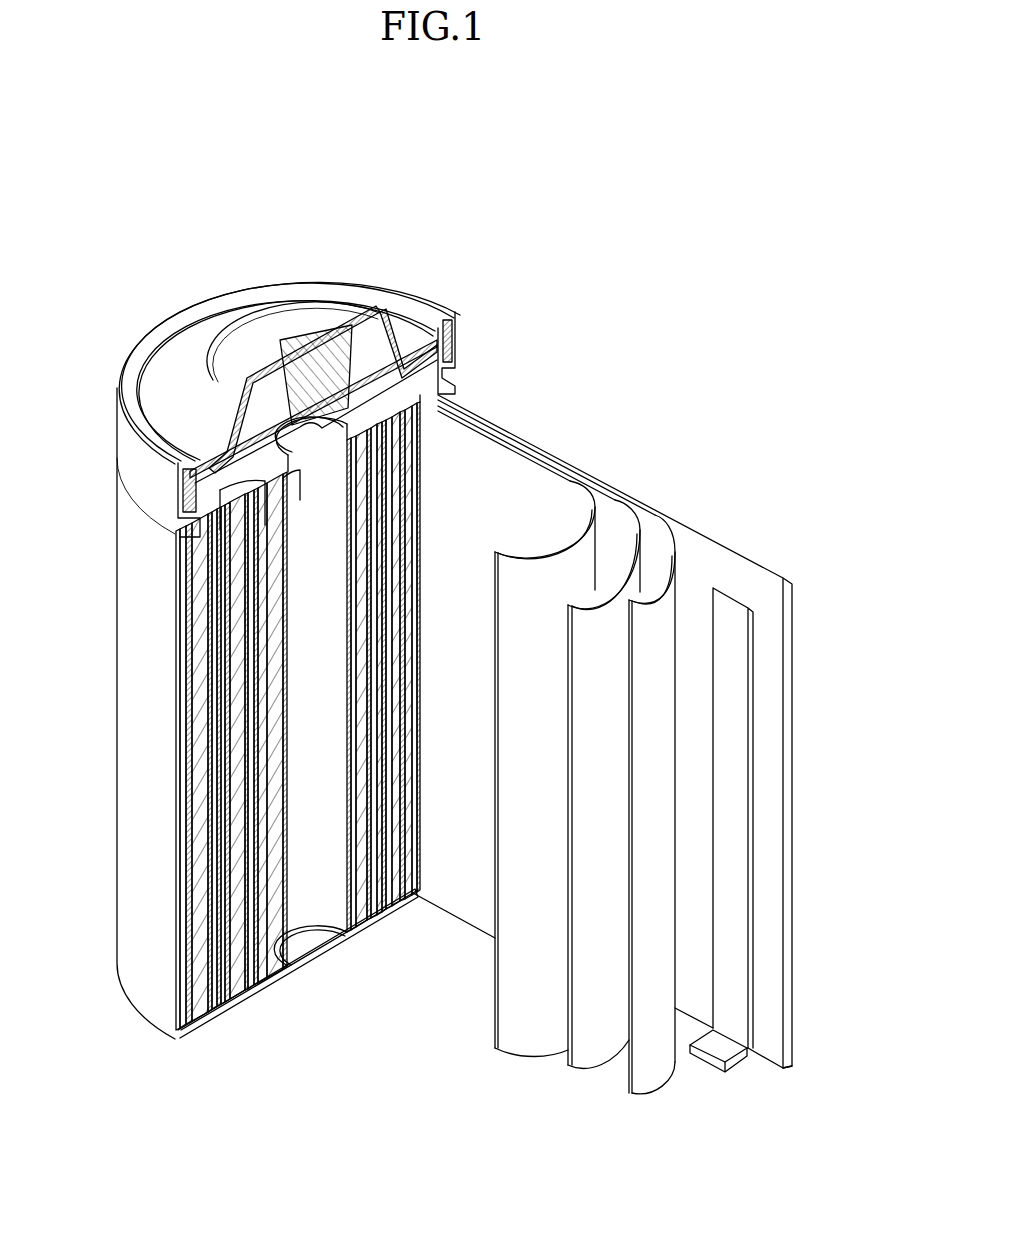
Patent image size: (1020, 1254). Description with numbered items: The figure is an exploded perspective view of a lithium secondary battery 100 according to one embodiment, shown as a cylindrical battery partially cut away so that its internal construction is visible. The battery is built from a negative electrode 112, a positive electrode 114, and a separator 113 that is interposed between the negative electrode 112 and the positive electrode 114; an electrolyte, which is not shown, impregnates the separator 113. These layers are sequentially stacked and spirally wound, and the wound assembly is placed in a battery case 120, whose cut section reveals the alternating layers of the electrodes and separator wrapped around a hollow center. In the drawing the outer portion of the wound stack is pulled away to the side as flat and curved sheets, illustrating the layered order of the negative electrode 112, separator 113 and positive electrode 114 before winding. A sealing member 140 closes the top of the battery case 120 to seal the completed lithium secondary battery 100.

The lithium secondary battery 100 is at (578, 317).
The negative electrode 112 is at (722, 546).
The separator 113 is at (585, 498).
The positive electrode 114 is at (610, 530).
The battery case 120 is at (140, 770).
The sealing member 140 is at (288, 323).